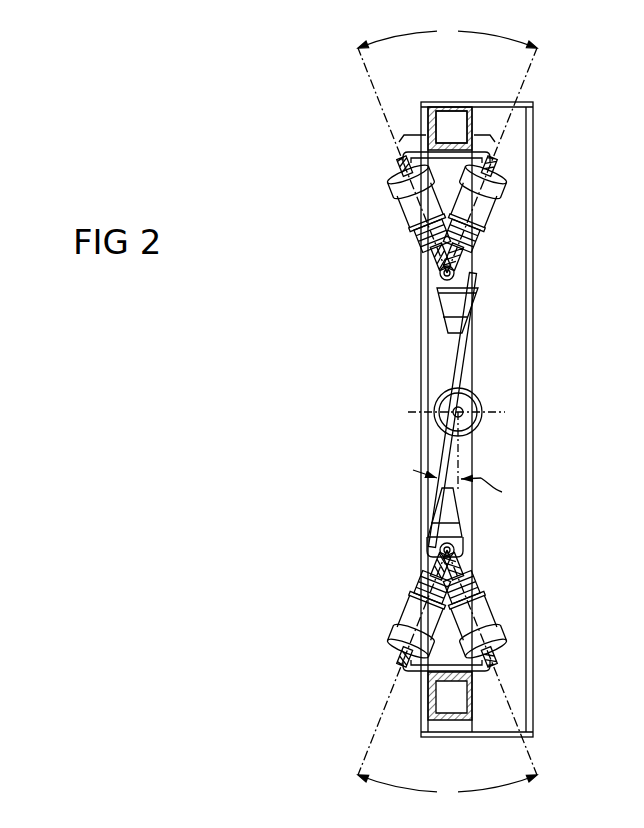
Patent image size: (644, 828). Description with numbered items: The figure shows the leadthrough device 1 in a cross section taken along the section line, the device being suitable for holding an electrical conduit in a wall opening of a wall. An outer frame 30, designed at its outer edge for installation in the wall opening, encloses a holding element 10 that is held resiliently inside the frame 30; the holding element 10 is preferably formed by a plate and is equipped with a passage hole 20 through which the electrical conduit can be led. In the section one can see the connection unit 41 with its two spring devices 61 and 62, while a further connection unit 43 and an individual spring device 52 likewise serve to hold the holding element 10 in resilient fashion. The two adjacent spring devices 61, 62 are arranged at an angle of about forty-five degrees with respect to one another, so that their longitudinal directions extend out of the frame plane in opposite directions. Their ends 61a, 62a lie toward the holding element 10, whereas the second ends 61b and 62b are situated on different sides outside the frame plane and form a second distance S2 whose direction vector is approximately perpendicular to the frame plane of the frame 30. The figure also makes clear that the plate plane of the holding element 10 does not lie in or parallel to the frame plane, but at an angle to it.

The leadthrough device 1 is at (295, 384).
The holding element 10 is at (474, 318).
The passage hole 20 is at (463, 372).
The outer frame 30 is at (440, 103).
The second distance S2 is at (446, 137).
The connection unit 41 is at (438, 233).
The connection unit 43 is at (390, 604).
The spring device 52 is at (473, 423).
The spring device 61 is at (480, 231).
The spring device 62 is at (418, 225).
The first end of first spring element 61a is at (365, 295).
The first end of second spring element 62a is at (443, 277).
The second end of spring device 61b is at (497, 156).
The second end of spring device 62b is at (395, 165).